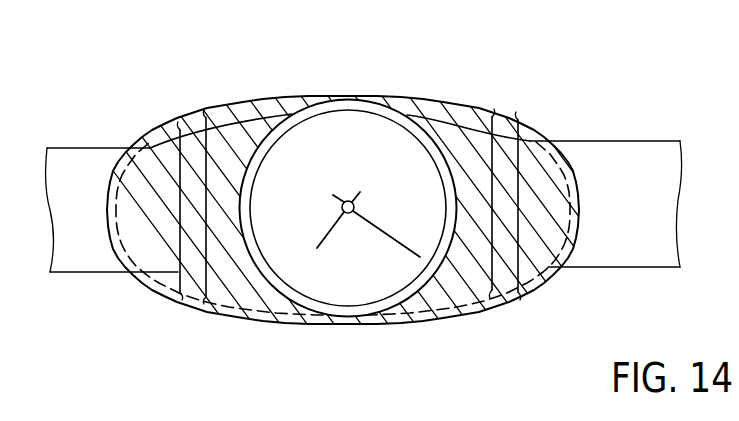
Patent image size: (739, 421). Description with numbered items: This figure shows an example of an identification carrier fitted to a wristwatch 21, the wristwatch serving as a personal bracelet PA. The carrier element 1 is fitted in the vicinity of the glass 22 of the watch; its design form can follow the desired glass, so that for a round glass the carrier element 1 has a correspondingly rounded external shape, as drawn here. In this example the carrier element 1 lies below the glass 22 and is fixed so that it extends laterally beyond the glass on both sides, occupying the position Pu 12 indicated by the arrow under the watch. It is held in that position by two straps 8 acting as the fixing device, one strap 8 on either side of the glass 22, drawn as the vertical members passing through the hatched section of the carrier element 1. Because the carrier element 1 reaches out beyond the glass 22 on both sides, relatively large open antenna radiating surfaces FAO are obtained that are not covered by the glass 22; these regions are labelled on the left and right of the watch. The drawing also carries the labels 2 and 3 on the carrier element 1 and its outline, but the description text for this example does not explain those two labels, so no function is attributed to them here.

The carrier element 1 is at (238, 110).
The inner boundary line of casing (dashed) 2 is at (236, 309).
The outer surface of casing 3 is at (180, 107).
The strap 8 is at (192, 192).
The wristwatch 21 is at (448, 116).
The glass 22 is at (392, 138).
The personal bracelet PA is at (68, 167).
The open antenna radiating surfaces FAO is at (157, 230).
The position Pu12 12 is at (352, 340).